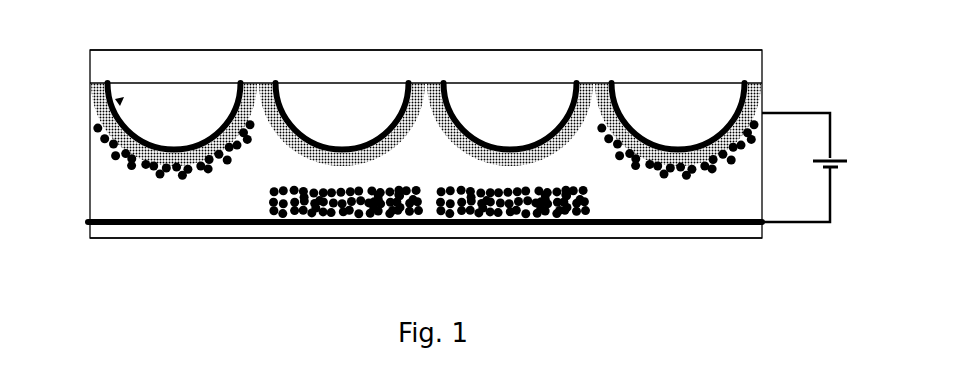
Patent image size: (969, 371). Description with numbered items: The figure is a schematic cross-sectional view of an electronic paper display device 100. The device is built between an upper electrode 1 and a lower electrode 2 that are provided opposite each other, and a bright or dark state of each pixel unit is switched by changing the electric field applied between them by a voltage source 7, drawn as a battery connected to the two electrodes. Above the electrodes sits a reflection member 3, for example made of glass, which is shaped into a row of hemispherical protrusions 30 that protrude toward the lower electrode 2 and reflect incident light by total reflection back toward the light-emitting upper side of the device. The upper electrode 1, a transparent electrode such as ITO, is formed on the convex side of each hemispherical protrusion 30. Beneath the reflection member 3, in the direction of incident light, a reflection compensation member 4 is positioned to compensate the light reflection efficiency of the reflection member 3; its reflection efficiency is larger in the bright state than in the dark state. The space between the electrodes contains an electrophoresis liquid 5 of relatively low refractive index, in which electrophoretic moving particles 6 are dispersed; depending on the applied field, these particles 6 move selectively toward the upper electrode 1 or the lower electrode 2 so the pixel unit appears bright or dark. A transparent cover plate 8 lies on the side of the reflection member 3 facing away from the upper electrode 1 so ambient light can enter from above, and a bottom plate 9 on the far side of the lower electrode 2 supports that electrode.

The electronic paper display device 100 is at (80, 22).
The cover plate 8 is at (426, 38).
The upper electrode 1 is at (710, 120).
The reflection member 3 is at (392, 124).
The hemispherical protrusions 30 is at (426, 125).
The reflection compensation member 4 is at (421, 133).
The electrophoretic moving particles 6 is at (390, 189).
The electrophoresis liquid 5 is at (123, 234).
The bottom plate 9 is at (618, 245).
The lower electrode 2 is at (436, 242).
The voltage source 7 is at (830, 167).